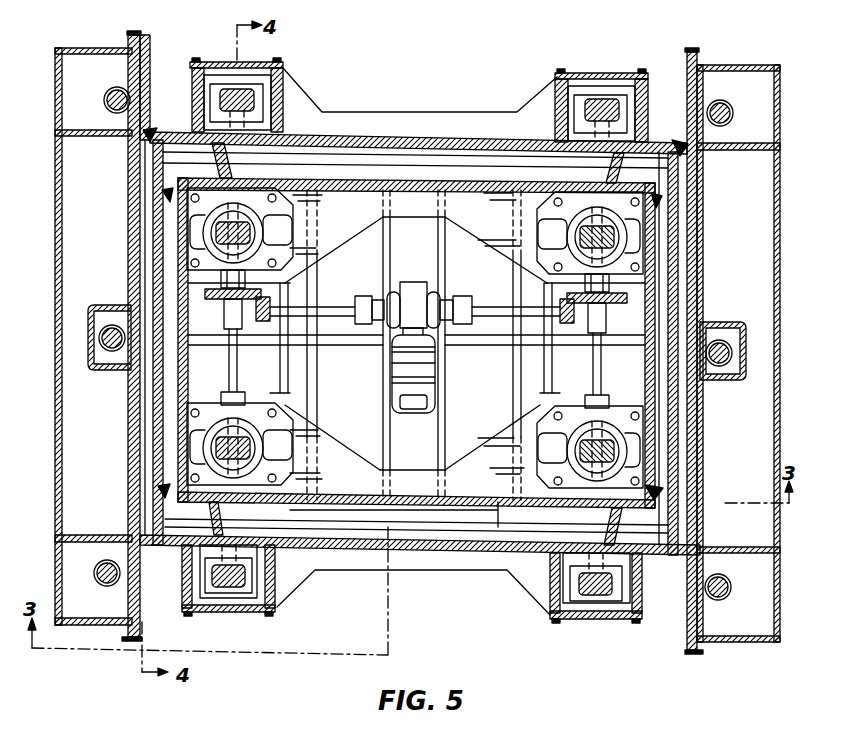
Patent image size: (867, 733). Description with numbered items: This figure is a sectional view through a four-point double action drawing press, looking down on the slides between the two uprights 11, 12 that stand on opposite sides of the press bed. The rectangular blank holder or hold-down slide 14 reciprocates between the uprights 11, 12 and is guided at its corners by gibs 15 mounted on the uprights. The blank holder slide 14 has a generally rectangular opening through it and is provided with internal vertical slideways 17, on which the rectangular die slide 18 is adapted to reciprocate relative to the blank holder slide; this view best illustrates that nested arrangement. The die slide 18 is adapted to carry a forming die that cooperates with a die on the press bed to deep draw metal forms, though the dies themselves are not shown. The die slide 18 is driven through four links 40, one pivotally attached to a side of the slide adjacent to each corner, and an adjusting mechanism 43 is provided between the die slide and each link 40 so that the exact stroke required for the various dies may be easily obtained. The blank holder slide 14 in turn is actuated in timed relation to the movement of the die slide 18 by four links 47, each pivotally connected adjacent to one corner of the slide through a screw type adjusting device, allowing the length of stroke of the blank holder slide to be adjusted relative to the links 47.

The upright 11 is at (55, 528).
The upright 12 is at (776, 430).
The blank holder slide 14 is at (351, 550).
The gibs 15 is at (150, 68).
The vertical slideways 17 is at (218, 163).
The die slide 18 is at (395, 183).
The link 40 is at (246, 229).
The adjusting mechanism 43 is at (322, 270).
The links 47 is at (245, 100).